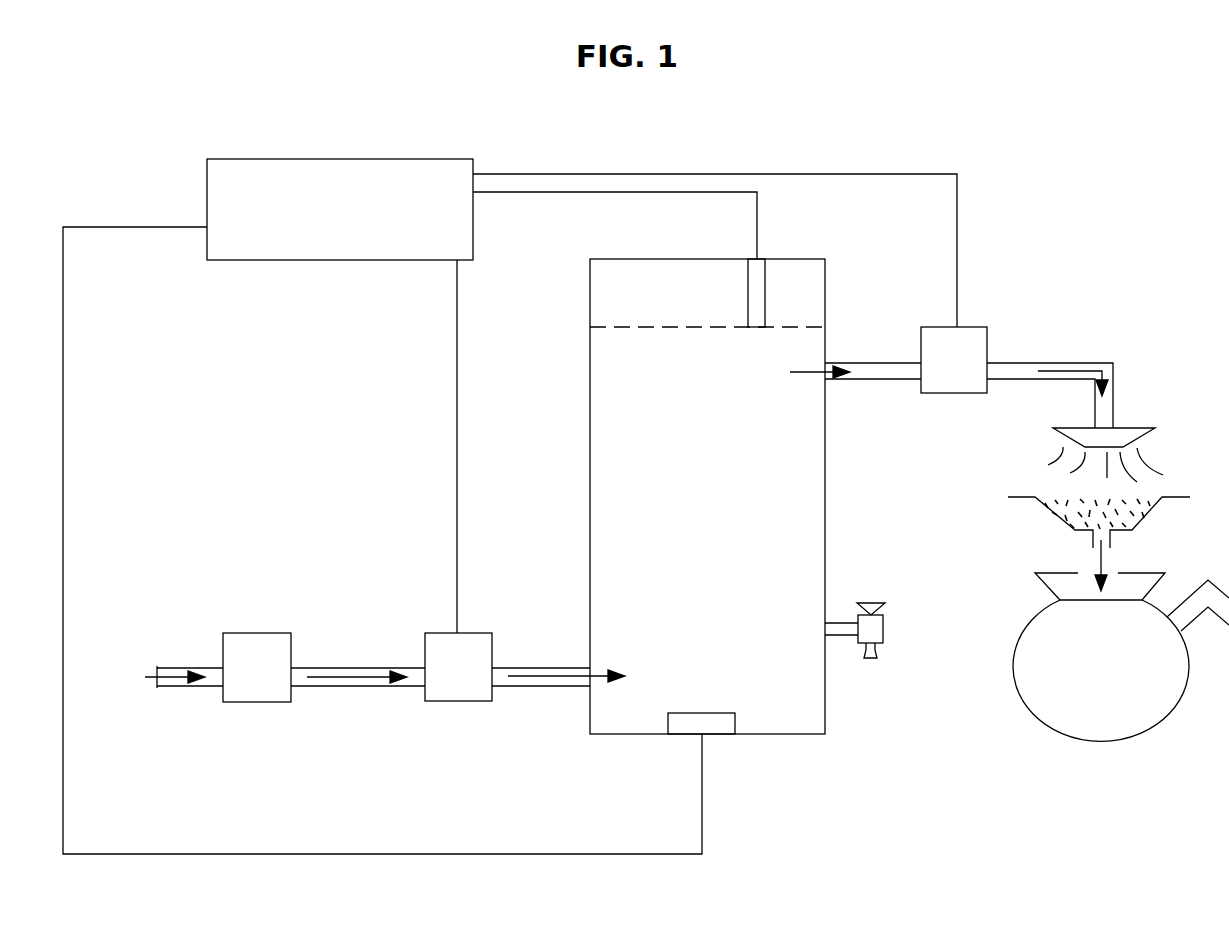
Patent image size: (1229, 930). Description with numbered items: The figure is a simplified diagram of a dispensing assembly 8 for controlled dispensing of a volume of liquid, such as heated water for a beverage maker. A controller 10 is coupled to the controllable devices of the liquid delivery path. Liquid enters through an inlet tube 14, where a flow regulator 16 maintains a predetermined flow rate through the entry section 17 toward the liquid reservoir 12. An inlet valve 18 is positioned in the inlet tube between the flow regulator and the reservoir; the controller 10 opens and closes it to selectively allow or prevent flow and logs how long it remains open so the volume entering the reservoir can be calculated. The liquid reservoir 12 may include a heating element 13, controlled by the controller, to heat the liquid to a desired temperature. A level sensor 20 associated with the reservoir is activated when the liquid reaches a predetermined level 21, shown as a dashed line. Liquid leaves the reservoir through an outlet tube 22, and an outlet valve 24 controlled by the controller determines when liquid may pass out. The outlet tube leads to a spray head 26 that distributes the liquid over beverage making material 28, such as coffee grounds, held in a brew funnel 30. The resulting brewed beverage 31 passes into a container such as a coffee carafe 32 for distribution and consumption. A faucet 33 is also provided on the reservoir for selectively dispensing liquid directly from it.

The dispensing assembly 8 is at (856, 794).
The controller 10 is at (313, 260).
The liquid reservoir 12 is at (617, 734).
The heating element 13 is at (715, 727).
The inlet tube 14 is at (199, 712).
The flow regulator 16 is at (257, 702).
The entry section 17 is at (373, 686).
The inlet valve 18 is at (474, 701).
The level sensor 20 is at (768, 294).
The predetermined level 21 is at (846, 325).
The outlet tube 22 is at (865, 404).
The outlet valve 24 is at (955, 393).
The spray head 26 is at (1135, 428).
The beverage making material 28 is at (1132, 524).
The brew funnel 30 is at (1032, 499).
The brewed beverage 31 is at (1098, 567).
The coffee carafe 32 is at (1125, 735).
The faucet 33 is at (883, 630).